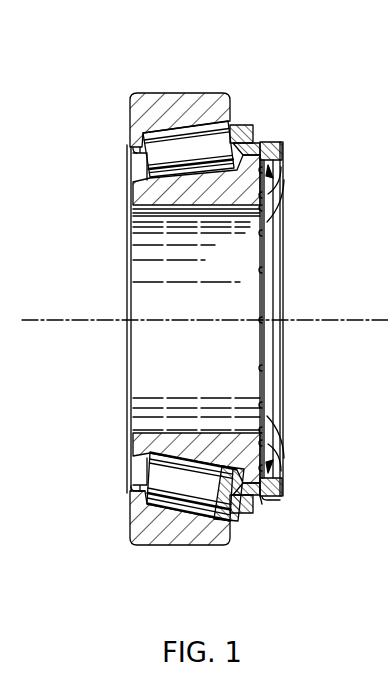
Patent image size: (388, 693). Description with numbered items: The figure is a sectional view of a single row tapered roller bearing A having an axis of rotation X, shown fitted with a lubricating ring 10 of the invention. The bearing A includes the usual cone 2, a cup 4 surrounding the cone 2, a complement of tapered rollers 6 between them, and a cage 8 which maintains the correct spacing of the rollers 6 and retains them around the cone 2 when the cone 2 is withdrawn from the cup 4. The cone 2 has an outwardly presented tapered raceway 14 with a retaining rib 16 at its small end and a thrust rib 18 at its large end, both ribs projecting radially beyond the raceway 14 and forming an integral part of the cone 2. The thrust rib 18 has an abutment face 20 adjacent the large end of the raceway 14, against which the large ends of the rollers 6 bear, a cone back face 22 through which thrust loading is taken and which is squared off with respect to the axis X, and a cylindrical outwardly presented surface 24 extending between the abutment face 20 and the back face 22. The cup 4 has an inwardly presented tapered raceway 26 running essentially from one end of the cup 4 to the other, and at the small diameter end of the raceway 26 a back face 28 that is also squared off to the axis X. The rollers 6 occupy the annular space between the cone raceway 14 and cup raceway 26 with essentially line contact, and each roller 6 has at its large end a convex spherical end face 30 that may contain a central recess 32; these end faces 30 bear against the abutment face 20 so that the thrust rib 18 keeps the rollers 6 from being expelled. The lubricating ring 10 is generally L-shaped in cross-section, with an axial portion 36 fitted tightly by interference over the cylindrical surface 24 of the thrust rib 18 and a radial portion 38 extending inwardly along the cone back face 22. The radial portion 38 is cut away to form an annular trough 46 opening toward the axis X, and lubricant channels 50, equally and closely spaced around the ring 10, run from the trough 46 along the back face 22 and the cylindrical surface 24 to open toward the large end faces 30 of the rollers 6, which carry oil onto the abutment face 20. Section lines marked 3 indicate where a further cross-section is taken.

The single row tapered roller bearing A is at (108, 103).
The axis of rotation X is at (205, 307).
The cone 2 is at (130, 284).
The section line 3- 3 is at (249, 38).
The cup 4 is at (186, 540).
The tapered rollers 6 is at (173, 487).
The cage 8 is at (128, 478).
The lubricating ring 10 is at (282, 303).
The cone raceway 14 is at (158, 437).
The retaining rib 16 is at (137, 458).
The thrust rib 18 is at (285, 473).
The abutment face 20 is at (240, 458).
The cone back face 22 is at (267, 457).
The cylindrical outwardly presented surface 24 is at (263, 498).
The cup raceway 26 is at (130, 503).
The cup back face 28 is at (132, 525).
The spherical end face 30 is at (243, 522).
The recess 32 is at (265, 504).
The axial portion 36 is at (263, 143).
The radial portion 38 is at (281, 167).
The annular trough 46 is at (276, 207).
The lubricant channels 50 is at (280, 147).